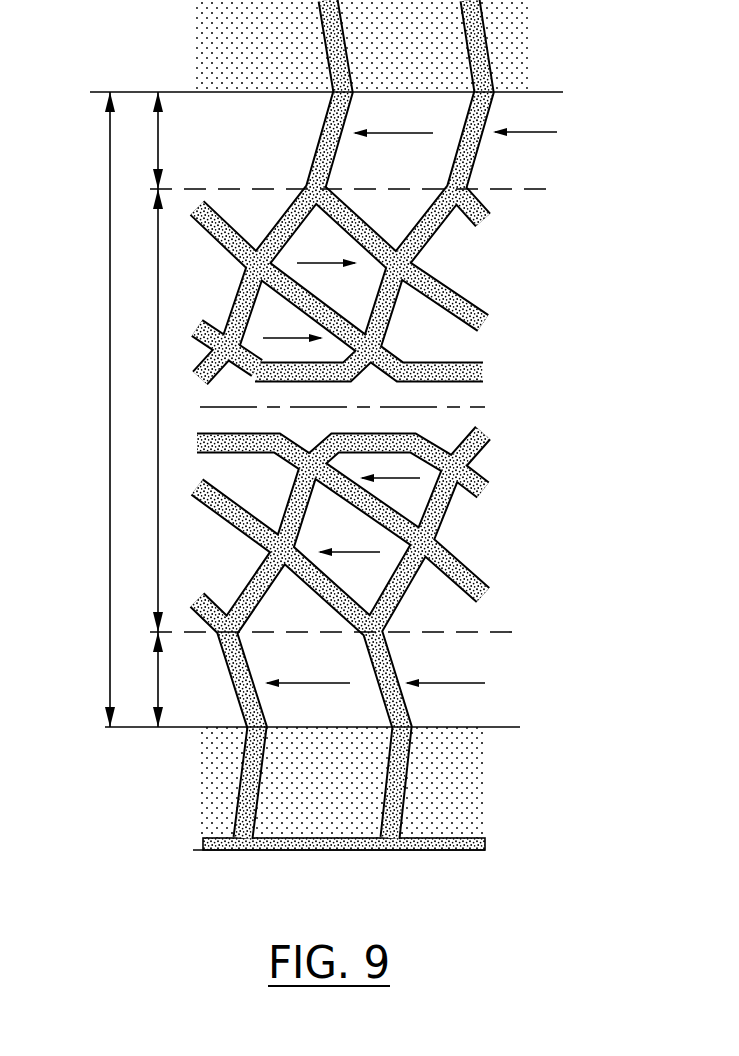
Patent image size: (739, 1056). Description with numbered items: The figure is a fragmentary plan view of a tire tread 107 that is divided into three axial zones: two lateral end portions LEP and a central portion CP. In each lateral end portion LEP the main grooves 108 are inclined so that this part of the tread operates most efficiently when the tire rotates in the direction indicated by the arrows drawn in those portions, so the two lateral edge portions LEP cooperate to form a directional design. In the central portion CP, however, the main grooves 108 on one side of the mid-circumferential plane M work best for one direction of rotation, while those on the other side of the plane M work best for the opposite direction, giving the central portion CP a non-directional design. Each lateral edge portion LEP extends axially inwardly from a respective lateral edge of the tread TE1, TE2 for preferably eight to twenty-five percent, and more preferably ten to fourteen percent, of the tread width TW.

The tread 107 is at (406, 419).
The main grooves 108 is at (323, 171).
The lateral edge of the tread TE1 is at (497, 730).
The lateral edge of the tread TE2 is at (535, 92).
The lateral end portion LEP is at (160, 143).
The mid-circumferential plane M is at (477, 406).
The tread width TW is at (110, 430).
The central portion CP is at (158, 562).